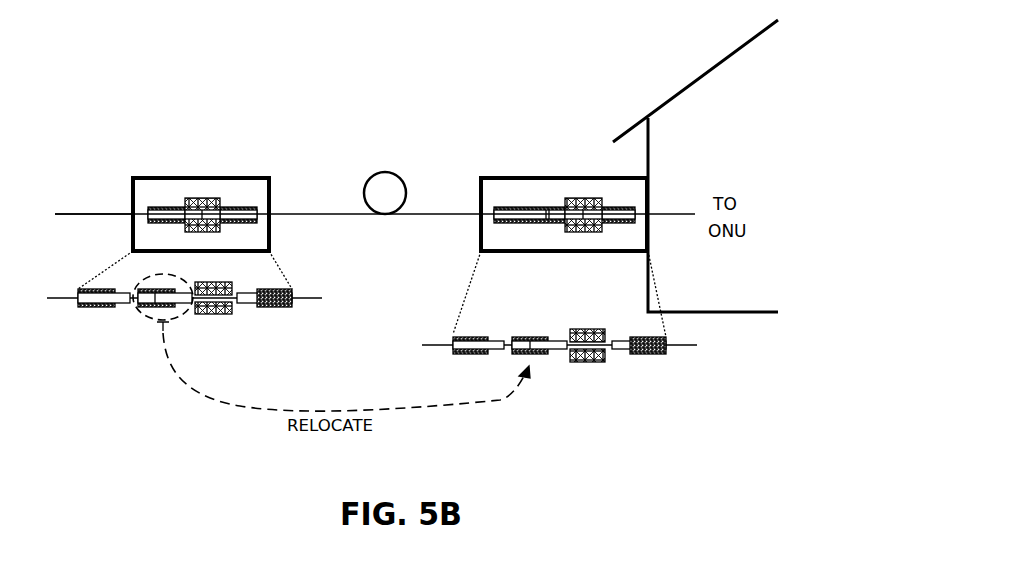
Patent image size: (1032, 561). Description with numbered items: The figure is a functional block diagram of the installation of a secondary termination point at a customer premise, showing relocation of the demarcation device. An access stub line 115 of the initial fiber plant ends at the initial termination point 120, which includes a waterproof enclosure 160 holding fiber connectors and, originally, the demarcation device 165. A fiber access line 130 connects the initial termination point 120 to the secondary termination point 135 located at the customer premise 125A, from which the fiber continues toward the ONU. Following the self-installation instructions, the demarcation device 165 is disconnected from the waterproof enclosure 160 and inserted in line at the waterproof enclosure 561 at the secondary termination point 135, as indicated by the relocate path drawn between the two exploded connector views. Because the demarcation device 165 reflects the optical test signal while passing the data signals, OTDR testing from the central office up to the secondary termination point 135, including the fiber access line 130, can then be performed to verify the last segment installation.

The access stub line 115 is at (95, 214).
The initial termination point 120 is at (185, 95).
The waterproof enclosure 160 is at (170, 178).
The fiber access line 130 is at (378, 175).
The secondary termination point 135 is at (586, 87).
The waterproof enclosure 561 is at (522, 178).
The customer premise 125A is at (742, 123).
The demarcation device 165 is at (535, 337).